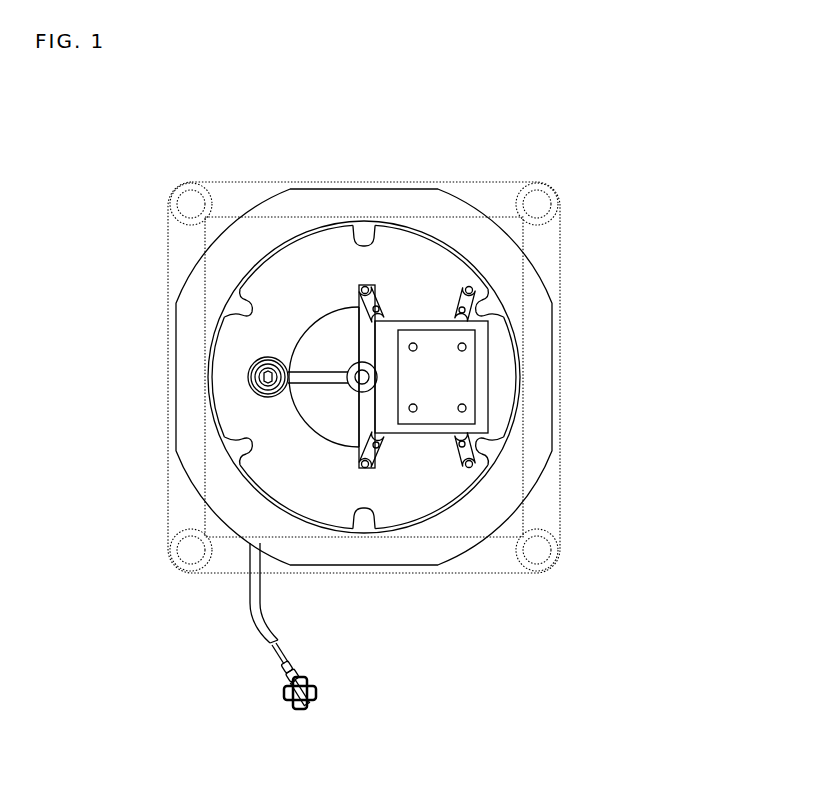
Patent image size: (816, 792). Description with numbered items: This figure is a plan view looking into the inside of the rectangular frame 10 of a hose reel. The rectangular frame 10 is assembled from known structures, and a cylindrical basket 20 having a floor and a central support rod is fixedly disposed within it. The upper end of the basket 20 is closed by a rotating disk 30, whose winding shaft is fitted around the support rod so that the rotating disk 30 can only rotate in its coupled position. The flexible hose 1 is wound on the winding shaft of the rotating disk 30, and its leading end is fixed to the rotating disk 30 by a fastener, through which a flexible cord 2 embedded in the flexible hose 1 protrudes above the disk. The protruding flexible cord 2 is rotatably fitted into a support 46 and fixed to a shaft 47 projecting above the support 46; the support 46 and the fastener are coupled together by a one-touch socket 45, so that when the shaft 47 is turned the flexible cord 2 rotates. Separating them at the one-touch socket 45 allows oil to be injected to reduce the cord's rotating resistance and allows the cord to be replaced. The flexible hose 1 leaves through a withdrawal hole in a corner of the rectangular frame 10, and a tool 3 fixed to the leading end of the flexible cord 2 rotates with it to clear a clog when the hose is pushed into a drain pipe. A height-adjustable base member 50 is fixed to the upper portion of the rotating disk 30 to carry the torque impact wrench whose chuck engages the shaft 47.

The flexible hose 1 is at (252, 590).
The flexible cord 2 is at (272, 657).
The tool 3 is at (317, 687).
The rectangular frame 10 is at (550, 244).
The cylindrical basket 20 is at (258, 252).
The rotating disk 30 is at (407, 480).
The one-touch socket 45 is at (250, 387).
The support 46 is at (252, 366).
The shaft 47 is at (272, 357).
The base member 50 is at (448, 380).